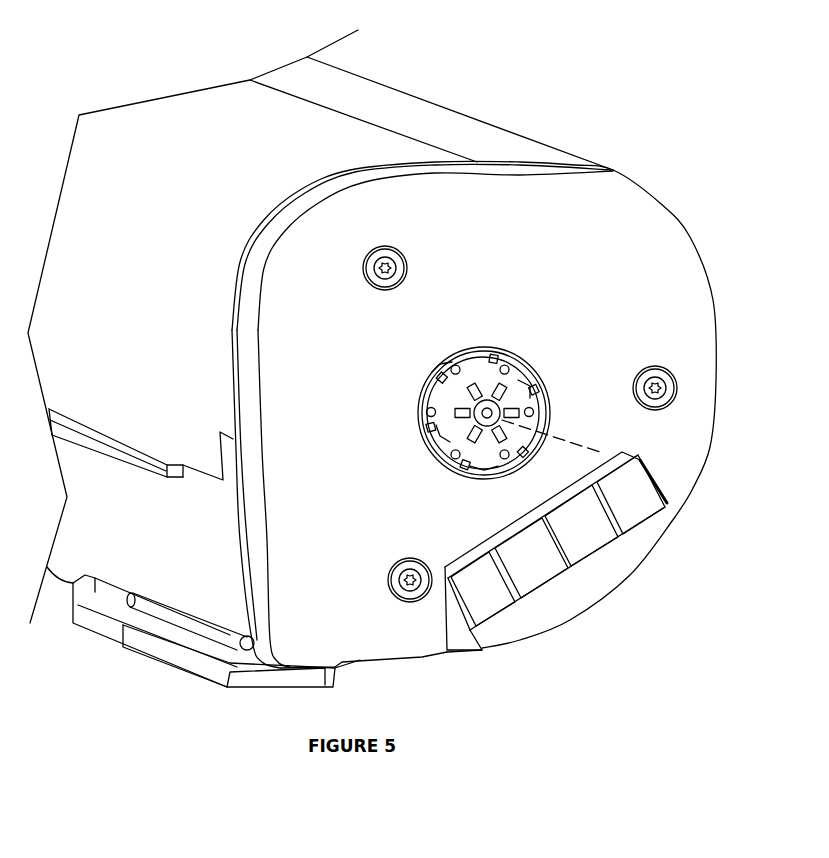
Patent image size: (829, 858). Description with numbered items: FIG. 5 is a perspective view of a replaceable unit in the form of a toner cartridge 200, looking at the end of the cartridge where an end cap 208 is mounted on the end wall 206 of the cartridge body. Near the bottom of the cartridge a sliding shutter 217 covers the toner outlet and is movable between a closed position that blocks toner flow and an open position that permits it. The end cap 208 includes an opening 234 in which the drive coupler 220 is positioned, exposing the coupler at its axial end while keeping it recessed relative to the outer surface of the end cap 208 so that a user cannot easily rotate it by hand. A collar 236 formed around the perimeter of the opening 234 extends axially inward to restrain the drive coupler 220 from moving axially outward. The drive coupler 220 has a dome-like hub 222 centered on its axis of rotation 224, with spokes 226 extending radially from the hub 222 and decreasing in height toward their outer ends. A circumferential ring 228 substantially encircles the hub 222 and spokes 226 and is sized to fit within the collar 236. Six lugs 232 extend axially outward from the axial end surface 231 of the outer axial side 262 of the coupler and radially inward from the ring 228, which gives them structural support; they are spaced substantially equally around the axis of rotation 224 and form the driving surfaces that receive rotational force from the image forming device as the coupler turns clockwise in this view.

The toner cartridge 200 is at (158, 126).
The end wall 206 is at (597, 585).
The end cap 208 is at (656, 206).
The sliding shutter 217 is at (175, 662).
The drive coupler 220 is at (517, 375).
The hub 222 is at (485, 400).
The axis of rotation 224 is at (586, 449).
The spokes 226 is at (470, 400).
The circumferential ring 228 is at (528, 390).
The axial end surface 231 is at (505, 422).
The lugs 232 is at (493, 358).
The opening 234 is at (427, 377).
The collar 236 is at (508, 468).
The outer axial side 262 is at (452, 435).